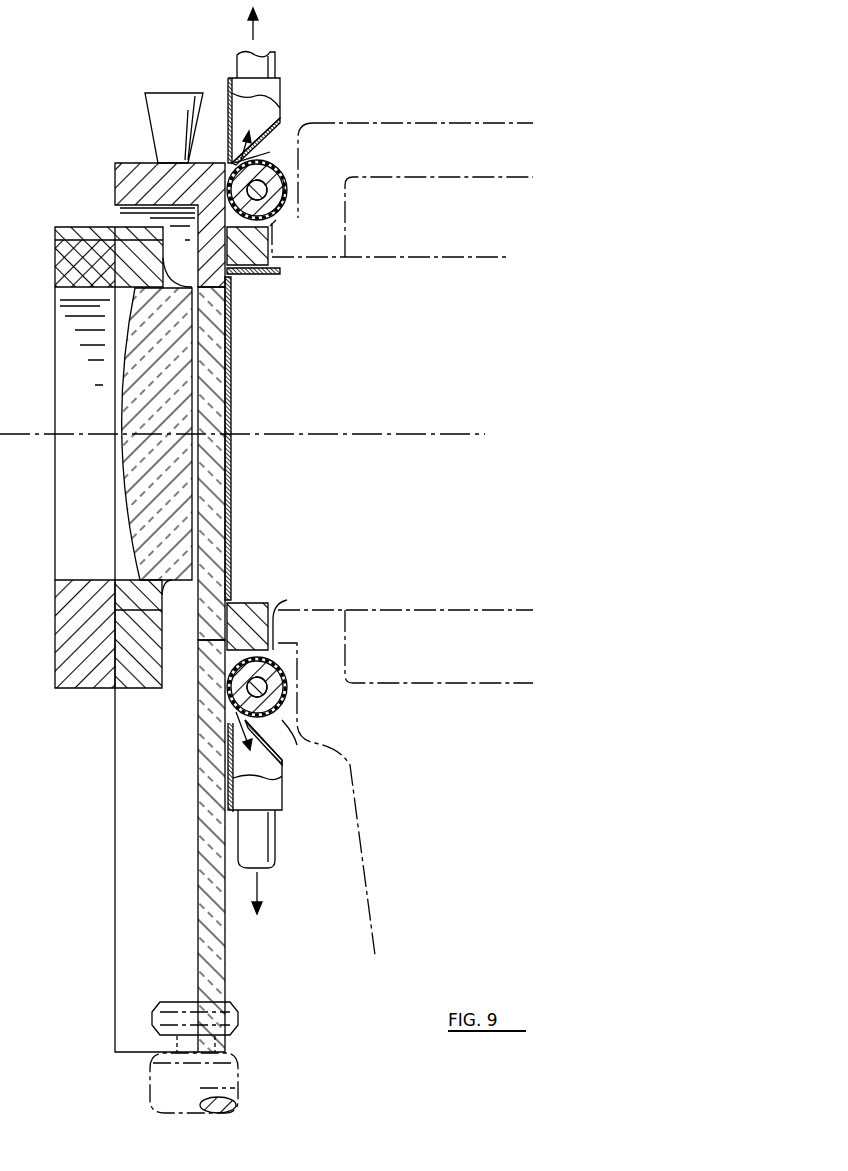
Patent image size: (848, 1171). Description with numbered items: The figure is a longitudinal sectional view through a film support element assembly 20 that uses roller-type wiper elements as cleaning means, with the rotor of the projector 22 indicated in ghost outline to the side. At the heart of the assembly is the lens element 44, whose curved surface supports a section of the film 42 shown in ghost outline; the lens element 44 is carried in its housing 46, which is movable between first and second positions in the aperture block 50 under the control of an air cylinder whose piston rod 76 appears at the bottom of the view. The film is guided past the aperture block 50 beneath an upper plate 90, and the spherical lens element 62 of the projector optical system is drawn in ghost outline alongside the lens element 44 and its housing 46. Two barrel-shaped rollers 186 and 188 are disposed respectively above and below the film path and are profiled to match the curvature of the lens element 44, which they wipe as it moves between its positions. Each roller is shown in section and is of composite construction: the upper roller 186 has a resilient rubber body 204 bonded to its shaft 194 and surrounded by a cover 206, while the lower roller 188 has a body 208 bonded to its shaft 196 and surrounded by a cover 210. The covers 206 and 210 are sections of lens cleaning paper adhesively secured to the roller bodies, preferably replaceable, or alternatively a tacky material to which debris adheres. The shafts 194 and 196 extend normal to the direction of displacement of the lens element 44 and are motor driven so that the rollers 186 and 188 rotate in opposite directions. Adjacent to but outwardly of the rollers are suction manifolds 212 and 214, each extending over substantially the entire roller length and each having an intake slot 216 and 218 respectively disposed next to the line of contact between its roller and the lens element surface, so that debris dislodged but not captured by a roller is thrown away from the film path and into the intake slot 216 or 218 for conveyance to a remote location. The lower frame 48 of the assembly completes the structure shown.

The stabilizer assembly 20 is at (106, 86).
The rotor of the projector 22 is at (428, 379).
The film 42 is at (232, 375).
The lens element 44 is at (230, 483).
The housing 46 is at (104, 183).
The shaft lower portion 48 is at (211, 915).
The aperture block 50 is at (262, 275).
The spherical lens element 62 is at (125, 484).
The piston rod 76 is at (237, 1088).
The upper plate 90 is at (244, 275).
The roller 186 is at (298, 174).
The roller 188 is at (291, 664).
The shaft 194 is at (268, 192).
The shaft 196 is at (268, 685).
The body 204 is at (281, 226).
The cover 206 is at (283, 212).
The body 208 is at (265, 718).
The cover 210 is at (272, 620).
The suction manifold 212 is at (273, 92).
The suction manifold 214 is at (265, 800).
The intake slot 216 is at (245, 162).
The intake slot 218 is at (228, 712).